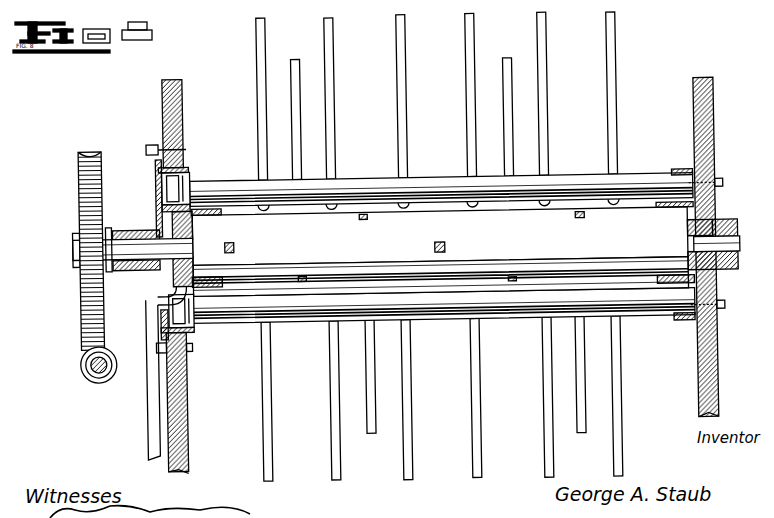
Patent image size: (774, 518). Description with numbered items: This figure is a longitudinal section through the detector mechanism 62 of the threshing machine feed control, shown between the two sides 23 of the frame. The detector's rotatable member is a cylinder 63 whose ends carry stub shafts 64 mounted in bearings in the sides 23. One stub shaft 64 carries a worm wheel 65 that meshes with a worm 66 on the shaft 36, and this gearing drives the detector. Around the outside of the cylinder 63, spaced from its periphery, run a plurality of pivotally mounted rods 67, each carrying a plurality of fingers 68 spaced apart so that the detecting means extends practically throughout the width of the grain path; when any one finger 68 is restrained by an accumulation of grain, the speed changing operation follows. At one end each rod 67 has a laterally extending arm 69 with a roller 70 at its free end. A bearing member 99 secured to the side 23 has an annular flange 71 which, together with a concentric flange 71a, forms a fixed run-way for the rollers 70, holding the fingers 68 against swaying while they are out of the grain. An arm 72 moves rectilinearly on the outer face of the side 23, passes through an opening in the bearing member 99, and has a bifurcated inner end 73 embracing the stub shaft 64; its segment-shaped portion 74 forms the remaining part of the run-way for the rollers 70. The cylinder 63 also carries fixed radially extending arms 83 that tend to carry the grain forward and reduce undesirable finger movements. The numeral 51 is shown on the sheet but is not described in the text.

The side of the frame 23 is at (730, 134).
The shaft 36 is at (81, 357).
The member 51 is at (210, 0).
The detector mechanism 62 is at (368, 191).
The cylinder 63 is at (440, 252).
The stub shaft 64 is at (193, 243).
The worm wheel 65 is at (81, 185).
The worm 66 is at (78, 350).
The rod 67 is at (361, 182).
The finger 68 is at (330, 21).
The arm 69 is at (186, 189).
The roller 70 is at (167, 166).
The annular flange 71 is at (164, 191).
The flange 71a is at (184, 164).
The arm 72 is at (147, 416).
The bifurcated inner end 73 is at (157, 269).
The segment-shaped portion 74 is at (195, 269).
The radially extending arm 83 is at (294, 146).
The bearing member 99 is at (158, 226).